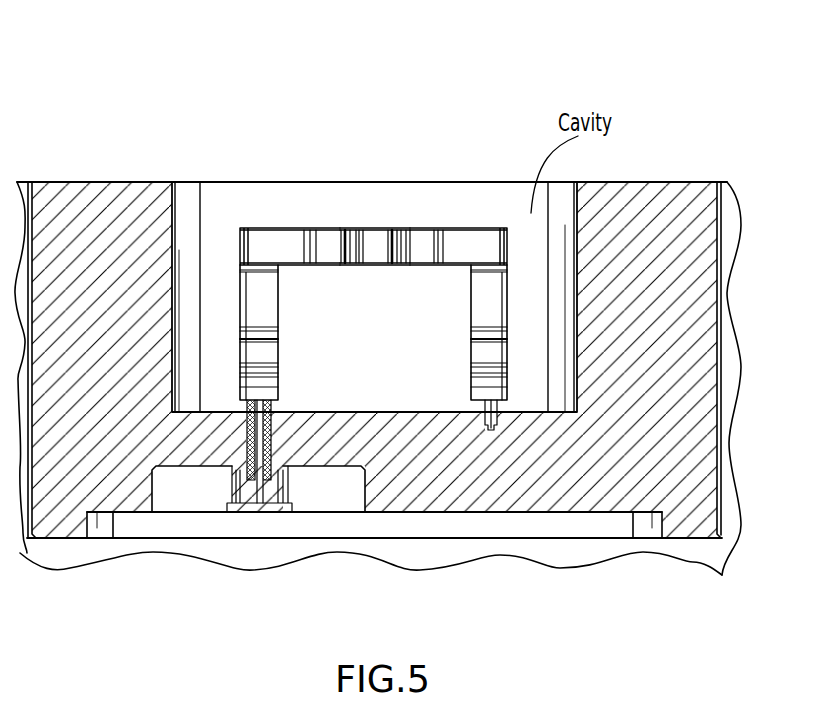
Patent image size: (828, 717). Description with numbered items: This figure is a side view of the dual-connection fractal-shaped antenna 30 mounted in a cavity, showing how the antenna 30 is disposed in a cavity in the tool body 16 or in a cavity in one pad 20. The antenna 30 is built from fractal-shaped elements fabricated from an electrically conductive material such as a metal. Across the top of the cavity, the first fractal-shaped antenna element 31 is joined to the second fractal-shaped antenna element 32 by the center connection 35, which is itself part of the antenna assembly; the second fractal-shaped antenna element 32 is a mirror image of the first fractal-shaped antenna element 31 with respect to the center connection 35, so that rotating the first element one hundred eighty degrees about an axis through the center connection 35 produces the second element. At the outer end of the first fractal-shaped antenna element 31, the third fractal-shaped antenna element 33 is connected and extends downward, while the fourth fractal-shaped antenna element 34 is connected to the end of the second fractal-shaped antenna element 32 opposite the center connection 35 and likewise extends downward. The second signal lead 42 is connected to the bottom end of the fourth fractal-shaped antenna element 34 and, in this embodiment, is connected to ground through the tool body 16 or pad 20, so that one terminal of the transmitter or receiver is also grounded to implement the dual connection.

The dual-connection fractal-shaped antenna 30 is at (264, 207).
The first fractal-shaped antenna element 31 is at (328, 237).
The second fractal-shaped antenna element 32 is at (478, 237).
The third fractal-shaped antenna element 33 is at (278, 297).
The fourth fractal-shaped antenna element 34 is at (471, 303).
The center connection 35 is at (378, 237).
The second signal lead 42 is at (483, 422).
The tool body 16 is at (378, 408).
The pad 20 is at (374, 573).